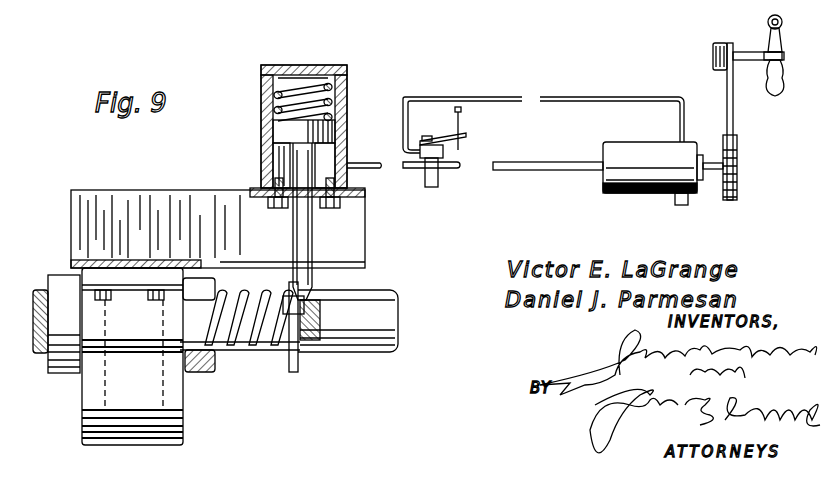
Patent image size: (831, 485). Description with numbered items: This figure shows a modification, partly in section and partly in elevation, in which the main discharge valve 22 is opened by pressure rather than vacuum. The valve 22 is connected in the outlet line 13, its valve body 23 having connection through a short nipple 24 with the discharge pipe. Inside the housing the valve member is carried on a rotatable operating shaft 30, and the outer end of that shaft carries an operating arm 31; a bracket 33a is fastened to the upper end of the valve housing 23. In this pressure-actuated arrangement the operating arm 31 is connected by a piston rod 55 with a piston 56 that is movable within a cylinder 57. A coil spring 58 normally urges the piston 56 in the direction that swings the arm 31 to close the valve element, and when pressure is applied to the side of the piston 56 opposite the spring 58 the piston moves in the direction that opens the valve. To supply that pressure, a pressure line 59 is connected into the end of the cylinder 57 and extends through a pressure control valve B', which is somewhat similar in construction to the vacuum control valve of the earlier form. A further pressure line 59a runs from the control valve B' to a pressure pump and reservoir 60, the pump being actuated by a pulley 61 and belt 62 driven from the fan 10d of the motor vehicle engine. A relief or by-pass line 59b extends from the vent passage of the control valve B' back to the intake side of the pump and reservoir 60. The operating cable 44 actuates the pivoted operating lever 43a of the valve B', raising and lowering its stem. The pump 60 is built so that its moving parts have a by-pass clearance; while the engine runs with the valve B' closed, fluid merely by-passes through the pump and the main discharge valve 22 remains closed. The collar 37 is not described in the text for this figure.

The fan 10d is at (766, 27).
The outlet line 13 is at (368, 292).
The main discharge valve 22 is at (183, 432).
The valve body 23 is at (86, 406).
The short nipple 24 is at (33, 292).
The operating shaft 30 is at (260, 352).
The operating arm 31 is at (294, 372).
The bracket 33a is at (145, 192).
The collar 37 is at (243, 355).
The operating lever 43a is at (456, 138).
The operating cable 44 is at (461, 126).
The piston rod 55 is at (300, 251).
The piston 56 is at (274, 138).
The cylinder 57 is at (268, 127).
The coil spring 58 is at (321, 75).
The pressure line 59 is at (368, 169).
The pressure line 59a is at (557, 163).
The relief or by-pass line 59b is at (400, 150).
The pressure pump and reservoir 60 is at (634, 193).
The pulley 61 is at (738, 190).
The belt 62 is at (735, 125).
The pressure control valve B' is at (443, 179).